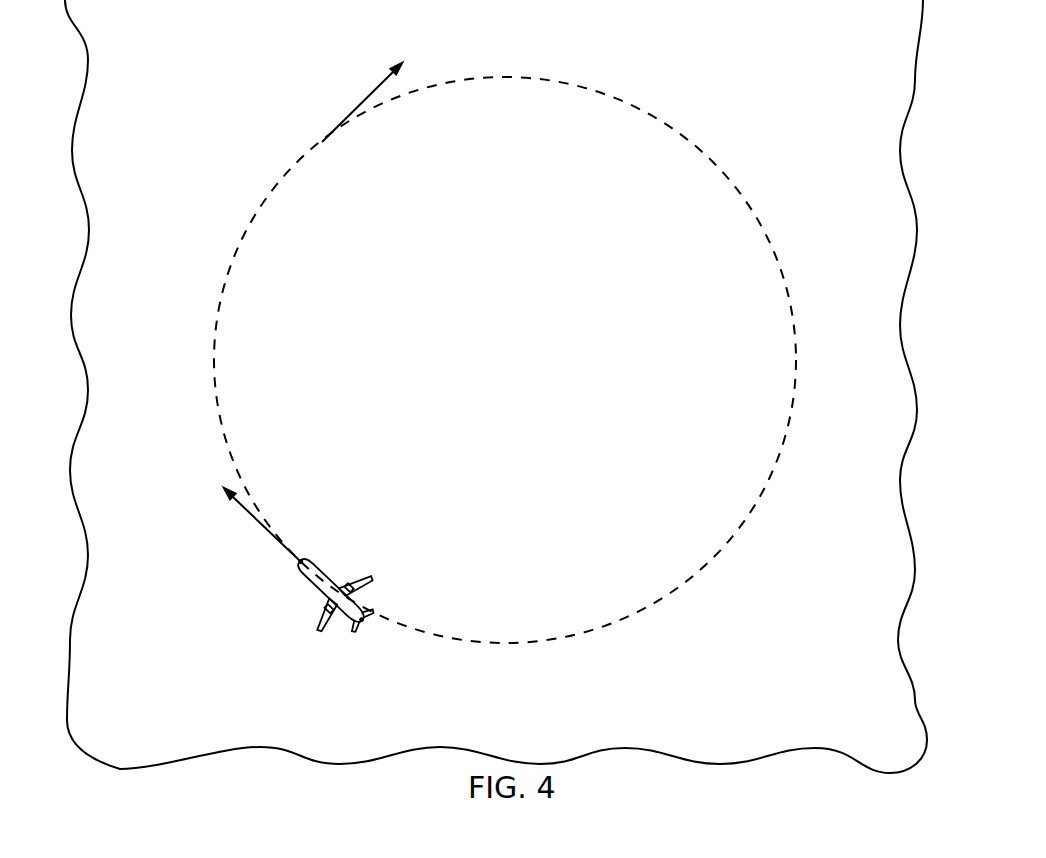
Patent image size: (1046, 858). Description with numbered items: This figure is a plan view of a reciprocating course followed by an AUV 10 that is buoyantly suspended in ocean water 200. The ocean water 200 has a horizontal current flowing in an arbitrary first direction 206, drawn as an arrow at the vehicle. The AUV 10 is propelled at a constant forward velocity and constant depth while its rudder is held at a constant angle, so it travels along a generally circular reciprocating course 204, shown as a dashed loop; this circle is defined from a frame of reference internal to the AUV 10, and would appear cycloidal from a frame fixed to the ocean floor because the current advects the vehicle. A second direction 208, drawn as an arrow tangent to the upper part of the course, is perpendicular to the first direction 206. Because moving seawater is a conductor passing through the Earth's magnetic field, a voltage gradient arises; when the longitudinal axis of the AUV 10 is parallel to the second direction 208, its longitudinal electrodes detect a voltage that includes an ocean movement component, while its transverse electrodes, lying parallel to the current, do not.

The AUV 10 is at (340, 587).
The ocean water 200 is at (741, 45).
The reciprocating course 204 is at (678, 585).
The first direction 206 is at (240, 503).
The second direction 208 is at (370, 92).